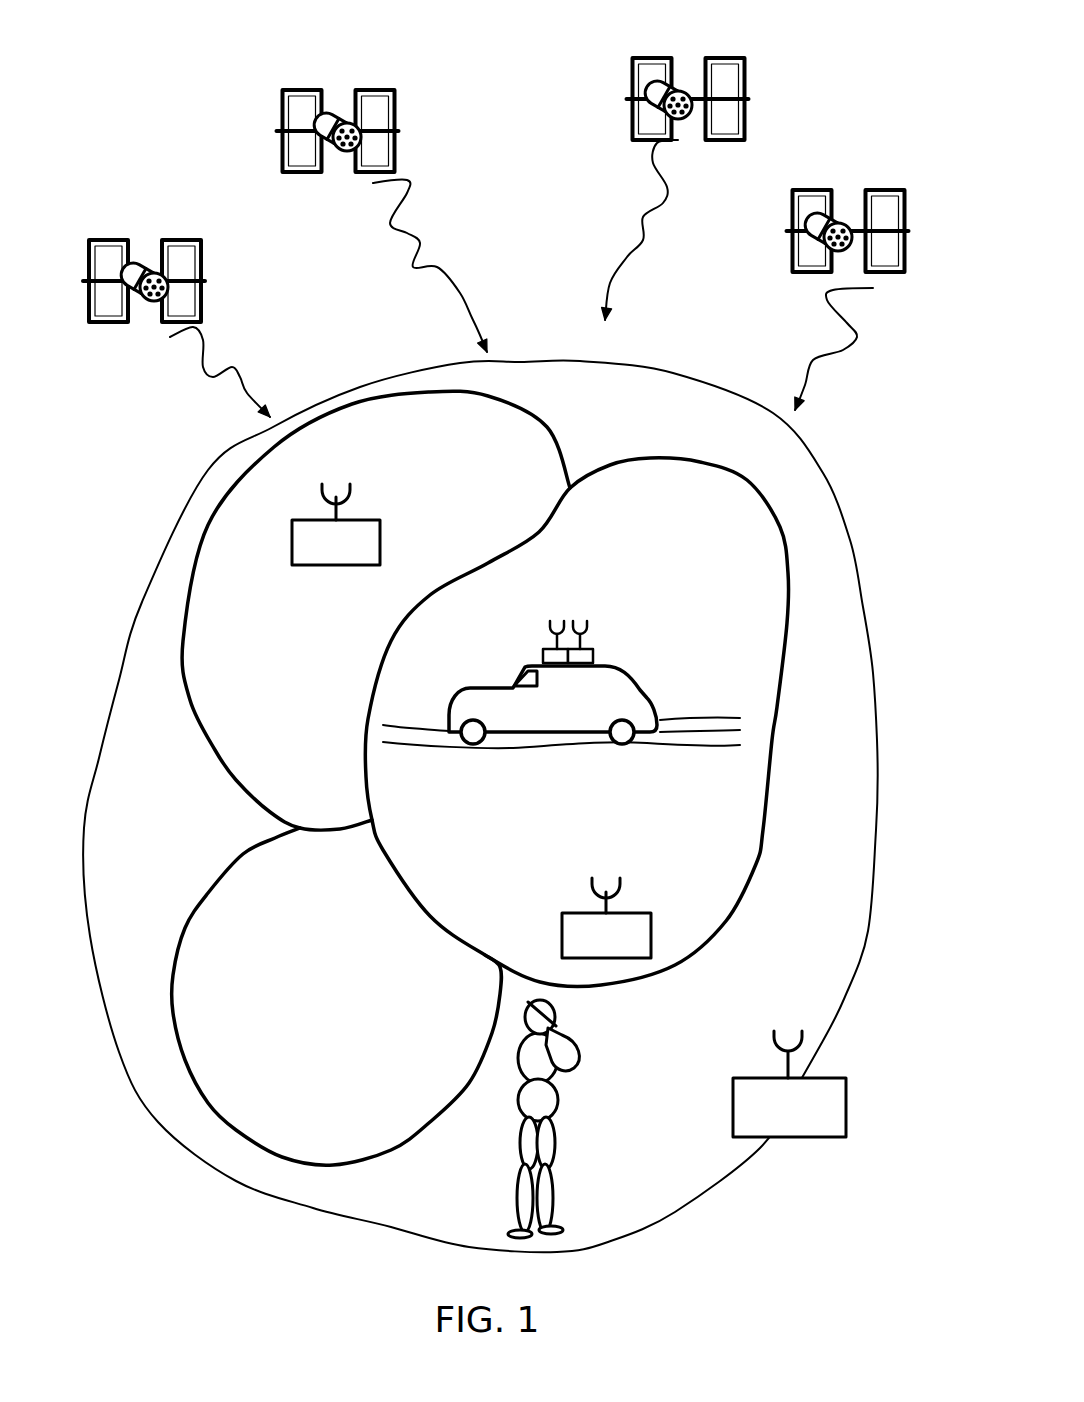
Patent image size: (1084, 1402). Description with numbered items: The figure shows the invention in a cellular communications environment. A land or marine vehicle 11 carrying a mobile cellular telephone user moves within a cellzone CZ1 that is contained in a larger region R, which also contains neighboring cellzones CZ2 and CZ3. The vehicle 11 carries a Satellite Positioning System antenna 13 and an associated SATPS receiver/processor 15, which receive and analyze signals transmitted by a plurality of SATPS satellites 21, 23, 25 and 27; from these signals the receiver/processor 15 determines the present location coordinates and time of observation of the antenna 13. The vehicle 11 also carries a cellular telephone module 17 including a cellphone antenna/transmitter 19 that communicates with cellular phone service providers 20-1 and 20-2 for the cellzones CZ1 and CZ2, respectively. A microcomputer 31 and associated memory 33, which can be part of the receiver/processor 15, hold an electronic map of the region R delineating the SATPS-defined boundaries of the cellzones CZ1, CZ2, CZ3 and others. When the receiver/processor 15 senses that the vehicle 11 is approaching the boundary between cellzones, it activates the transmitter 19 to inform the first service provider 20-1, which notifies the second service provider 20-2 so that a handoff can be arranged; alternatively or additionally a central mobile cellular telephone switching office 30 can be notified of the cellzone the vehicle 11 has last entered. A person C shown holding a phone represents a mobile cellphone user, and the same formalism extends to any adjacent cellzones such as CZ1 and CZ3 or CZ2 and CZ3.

The vehicle 11 is at (561, 681).
The SATPS antenna 13 is at (552, 627).
The SATPS receiver/processor 15 is at (500, 638).
The cellular telephone module 17 is at (585, 657).
The cellphone antenna/transmitter 19 is at (590, 632).
The SATPS satellite 21 is at (152, 267).
The SATPS satellite 23 is at (343, 113).
The SATPS satellite 25 is at (688, 80).
The SATPS satellite 27 is at (843, 213).
The first cellular service provider 20-1 is at (619, 928).
The second cellular service provider 20-2 is at (341, 542).
The central mobile cellular telephone switching office 30 is at (827, 1090).
The microcomputer 31 is at (500, 638).
The memory 33 is at (547, 657).
The cellzone CZ1 is at (652, 492).
The cellzone CZ2 is at (520, 450).
The cellzone CZ3 is at (247, 891).
The region R is at (837, 894).
The caller C is at (545, 1107).